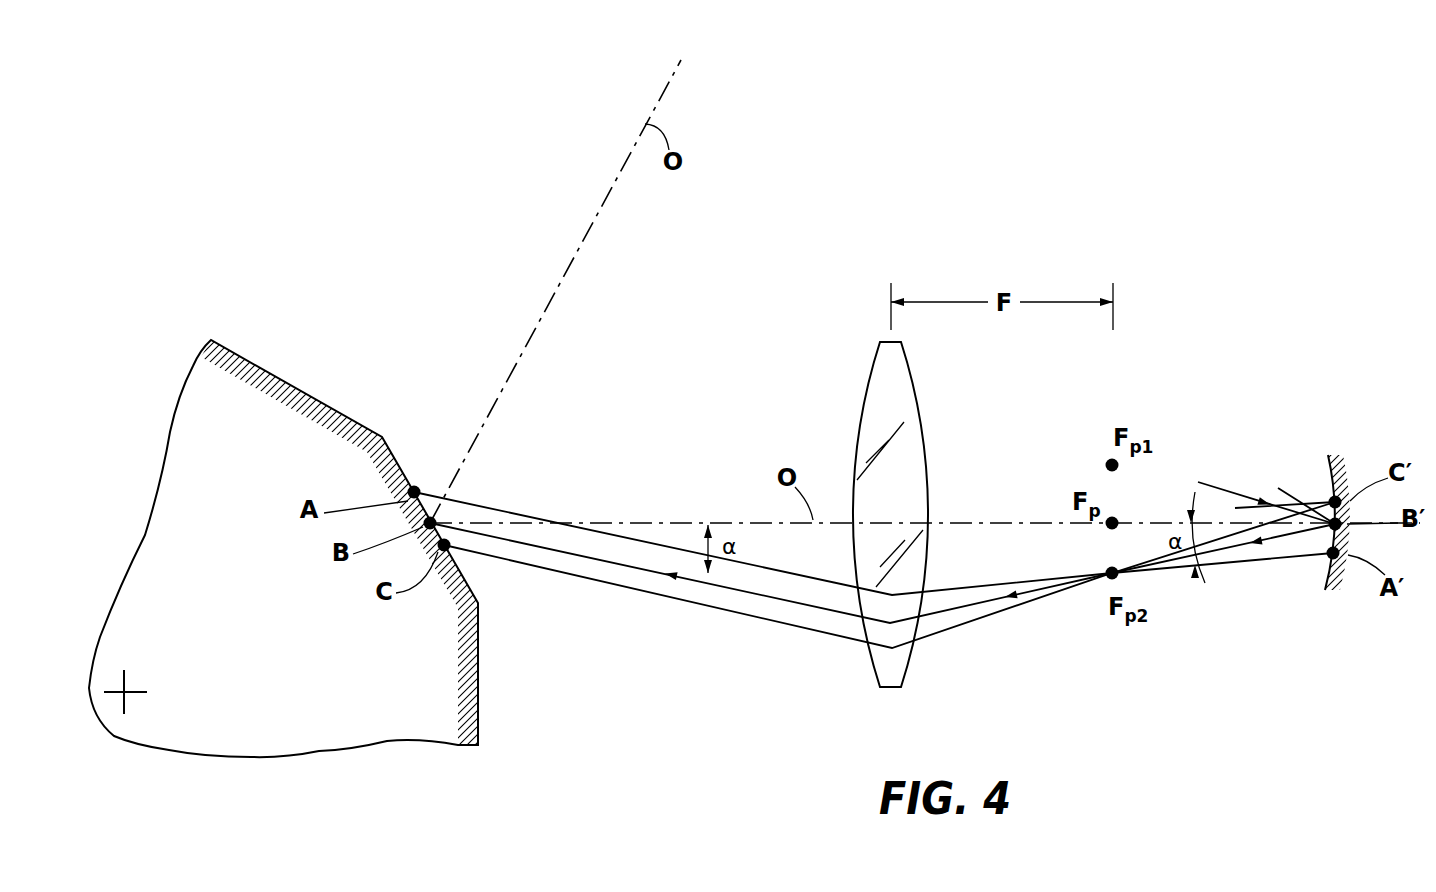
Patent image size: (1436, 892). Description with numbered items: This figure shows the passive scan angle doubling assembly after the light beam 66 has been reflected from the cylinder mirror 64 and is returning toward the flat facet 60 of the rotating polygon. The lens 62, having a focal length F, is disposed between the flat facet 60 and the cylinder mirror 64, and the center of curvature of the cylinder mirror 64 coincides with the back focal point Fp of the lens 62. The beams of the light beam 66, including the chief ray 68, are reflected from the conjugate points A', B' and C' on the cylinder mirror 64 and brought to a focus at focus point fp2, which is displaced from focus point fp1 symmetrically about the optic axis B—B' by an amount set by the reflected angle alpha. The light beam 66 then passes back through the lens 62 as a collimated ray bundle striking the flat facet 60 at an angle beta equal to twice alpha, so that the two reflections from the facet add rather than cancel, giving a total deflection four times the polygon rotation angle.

The flat facet 60 is at (394, 460).
The lens 62 is at (876, 666).
The cylinder mirror 64 is at (1325, 467).
The light beam 66 is at (874, 559).
The chief ray 68 is at (882, 565).